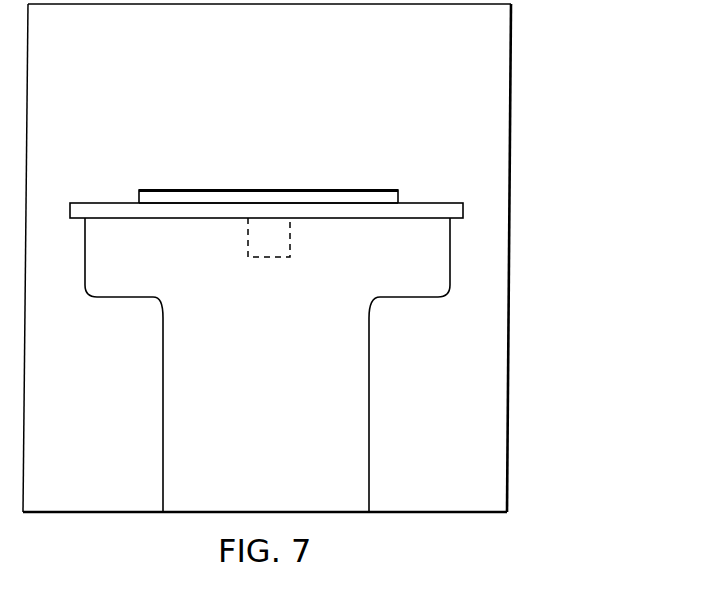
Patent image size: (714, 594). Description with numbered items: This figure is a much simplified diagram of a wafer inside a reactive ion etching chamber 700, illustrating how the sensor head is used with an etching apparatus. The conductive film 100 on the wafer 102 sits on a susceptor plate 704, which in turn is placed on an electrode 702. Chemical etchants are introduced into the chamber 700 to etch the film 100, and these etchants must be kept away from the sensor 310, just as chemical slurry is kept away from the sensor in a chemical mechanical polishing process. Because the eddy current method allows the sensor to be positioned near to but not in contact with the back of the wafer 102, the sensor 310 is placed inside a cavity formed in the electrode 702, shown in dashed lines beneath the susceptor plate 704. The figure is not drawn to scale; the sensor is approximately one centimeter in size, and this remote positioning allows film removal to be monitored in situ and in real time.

The RIE chamber 700 is at (495, 50).
The electrode 702 is at (395, 293).
The susceptor plate 704 is at (425, 210).
The conductive film 100 is at (312, 187).
The wafer 102 is at (140, 197).
The sensor 310 is at (248, 243).